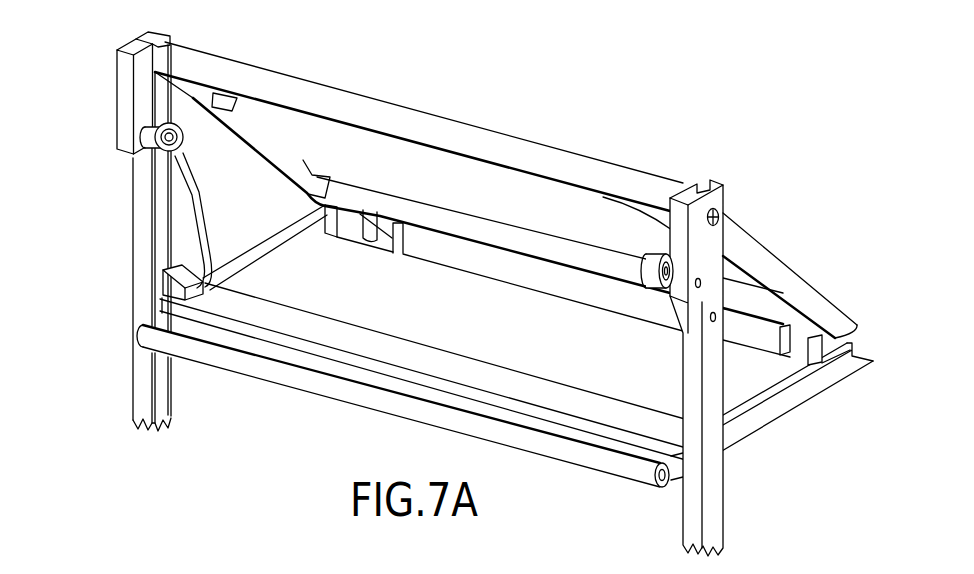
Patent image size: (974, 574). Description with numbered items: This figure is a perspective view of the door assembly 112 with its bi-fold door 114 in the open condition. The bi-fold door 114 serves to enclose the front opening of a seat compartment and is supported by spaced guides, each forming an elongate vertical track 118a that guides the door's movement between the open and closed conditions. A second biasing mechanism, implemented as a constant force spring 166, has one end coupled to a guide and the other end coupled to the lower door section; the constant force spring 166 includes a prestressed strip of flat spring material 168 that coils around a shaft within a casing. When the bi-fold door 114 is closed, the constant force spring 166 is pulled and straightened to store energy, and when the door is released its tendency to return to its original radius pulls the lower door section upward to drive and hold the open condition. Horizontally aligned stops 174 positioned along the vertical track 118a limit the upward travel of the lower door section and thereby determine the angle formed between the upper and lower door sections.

The door assembly 112 is at (852, 274).
The bi-fold door 114 is at (568, 160).
The vertical track 118a is at (168, 382).
The constant force spring 166 is at (187, 144).
The prestressed strip of flat spring material 168 is at (178, 172).
The stops 174 is at (182, 272).